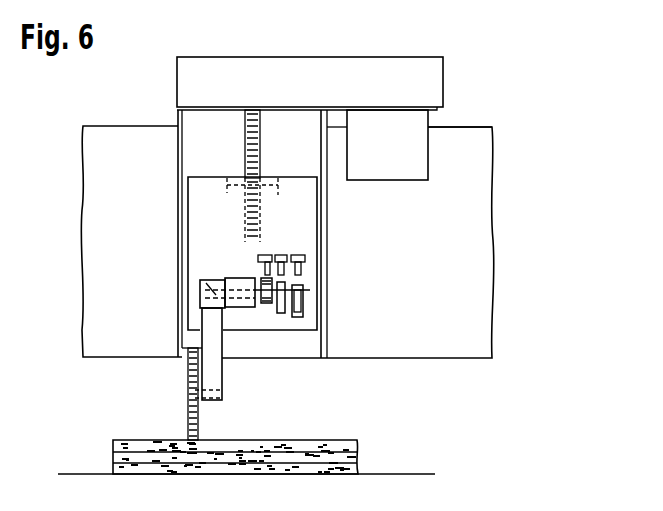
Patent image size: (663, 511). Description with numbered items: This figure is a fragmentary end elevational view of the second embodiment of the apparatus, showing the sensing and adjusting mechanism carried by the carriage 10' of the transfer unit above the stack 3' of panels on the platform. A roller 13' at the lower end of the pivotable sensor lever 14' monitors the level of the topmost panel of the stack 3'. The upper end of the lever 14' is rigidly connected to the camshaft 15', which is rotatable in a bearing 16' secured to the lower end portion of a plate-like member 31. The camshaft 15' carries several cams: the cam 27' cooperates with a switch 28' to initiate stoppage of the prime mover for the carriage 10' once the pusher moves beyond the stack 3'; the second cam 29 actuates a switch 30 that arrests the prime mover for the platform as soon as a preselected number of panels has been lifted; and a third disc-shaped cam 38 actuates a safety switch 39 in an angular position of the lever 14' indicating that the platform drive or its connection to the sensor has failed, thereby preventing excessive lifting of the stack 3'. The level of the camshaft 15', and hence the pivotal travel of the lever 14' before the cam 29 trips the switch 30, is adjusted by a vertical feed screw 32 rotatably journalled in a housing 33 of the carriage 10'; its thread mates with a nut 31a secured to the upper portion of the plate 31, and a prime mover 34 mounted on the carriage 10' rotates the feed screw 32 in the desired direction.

The stack 3' is at (207, 446).
The carriage 10' is at (484, 231).
The roller 13' is at (229, 394).
The sensor lever 14' is at (220, 357).
The camshaft 15' is at (198, 284).
The bearing 16' is at (222, 305).
The cam 27' is at (276, 334).
The switch 28' is at (236, 249).
The second cam 29 is at (290, 283).
The switch 30 is at (285, 252).
The plate-like member 31 is at (200, 201).
The nut 31a is at (261, 199).
The vertical feed screw 32 is at (260, 150).
The housing 33 is at (197, 127).
The prime mover 34 is at (417, 159).
The third disc-shaped cam 38 is at (305, 306).
The switch 39 is at (303, 257).